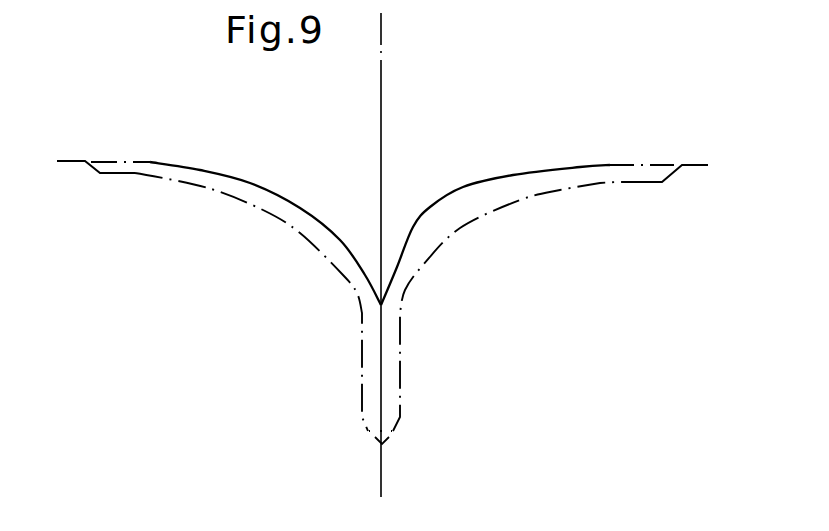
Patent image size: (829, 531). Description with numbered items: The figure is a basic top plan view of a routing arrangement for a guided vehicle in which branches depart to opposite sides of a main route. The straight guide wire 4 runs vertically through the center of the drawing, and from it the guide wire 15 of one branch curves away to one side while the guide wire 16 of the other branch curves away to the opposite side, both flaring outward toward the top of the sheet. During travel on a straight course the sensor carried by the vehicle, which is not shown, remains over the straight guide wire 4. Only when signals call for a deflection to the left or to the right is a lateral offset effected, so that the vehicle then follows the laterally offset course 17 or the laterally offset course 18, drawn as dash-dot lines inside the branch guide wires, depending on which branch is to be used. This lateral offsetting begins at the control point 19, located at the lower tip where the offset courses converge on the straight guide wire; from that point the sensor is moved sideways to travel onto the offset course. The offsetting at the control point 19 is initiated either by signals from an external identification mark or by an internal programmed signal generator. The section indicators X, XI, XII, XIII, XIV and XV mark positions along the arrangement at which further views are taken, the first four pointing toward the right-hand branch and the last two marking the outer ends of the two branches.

The straight guide wire 4 is at (378, 385).
The guide wire of one branch 15 is at (258, 186).
The guide wire of the other branch 16 is at (537, 175).
The laterally offset course 17 is at (360, 318).
The laterally offset course 18 is at (401, 356).
The control point 19 is at (383, 446).
The section line X is at (410, 329).
The section line XI is at (416, 298).
The section line XII is at (434, 272).
The section line XIII is at (467, 240).
The section line XIV is at (58, 170).
The section line XV is at (703, 172).